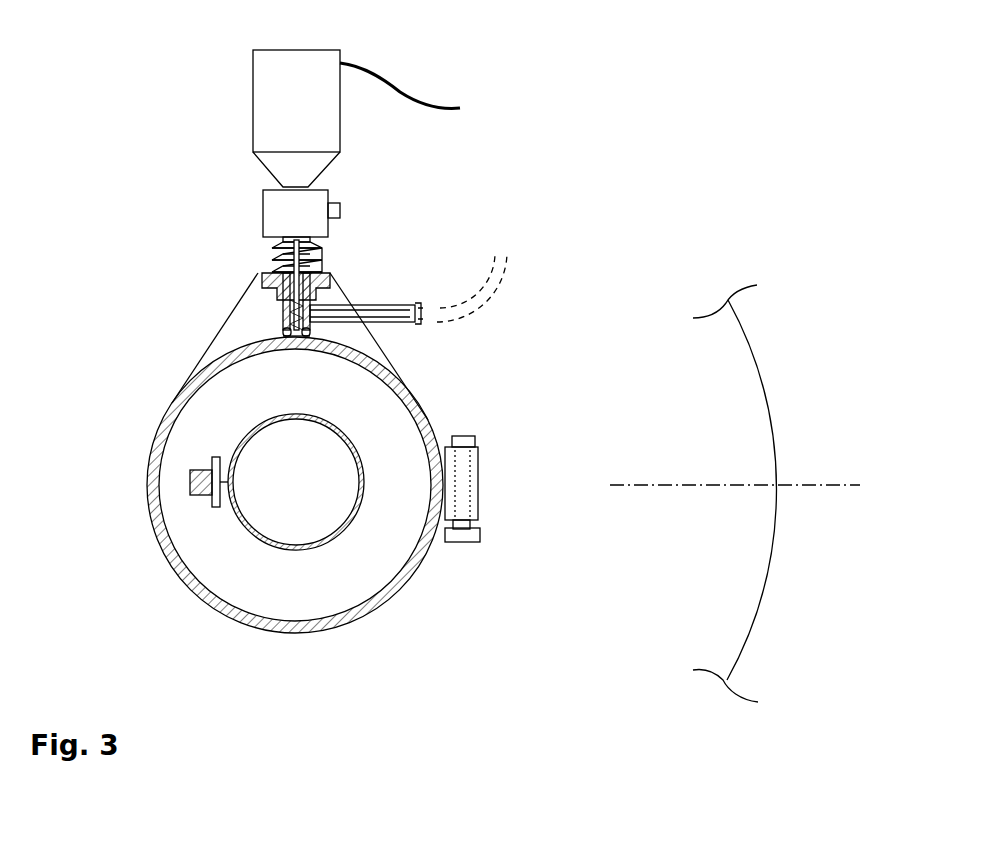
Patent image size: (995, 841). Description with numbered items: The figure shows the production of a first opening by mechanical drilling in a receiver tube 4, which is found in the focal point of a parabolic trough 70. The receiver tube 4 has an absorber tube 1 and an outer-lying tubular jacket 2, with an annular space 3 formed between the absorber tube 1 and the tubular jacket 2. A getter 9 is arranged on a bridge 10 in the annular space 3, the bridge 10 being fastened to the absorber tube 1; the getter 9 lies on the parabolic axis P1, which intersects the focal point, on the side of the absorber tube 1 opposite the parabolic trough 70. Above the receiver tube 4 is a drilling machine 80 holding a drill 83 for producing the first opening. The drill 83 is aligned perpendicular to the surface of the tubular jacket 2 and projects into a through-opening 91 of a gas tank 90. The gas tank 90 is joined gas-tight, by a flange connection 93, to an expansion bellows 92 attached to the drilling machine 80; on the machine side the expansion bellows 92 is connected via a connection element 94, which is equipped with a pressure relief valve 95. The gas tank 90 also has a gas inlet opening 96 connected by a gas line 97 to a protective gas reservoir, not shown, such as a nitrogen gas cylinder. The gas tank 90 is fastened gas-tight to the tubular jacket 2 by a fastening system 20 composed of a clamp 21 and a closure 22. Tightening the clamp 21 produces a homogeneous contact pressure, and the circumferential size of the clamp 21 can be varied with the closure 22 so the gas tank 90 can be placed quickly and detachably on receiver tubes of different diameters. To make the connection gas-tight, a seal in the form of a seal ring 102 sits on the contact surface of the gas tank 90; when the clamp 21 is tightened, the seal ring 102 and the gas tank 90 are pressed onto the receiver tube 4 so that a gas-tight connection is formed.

The absorber tube 1 is at (238, 527).
The tubular jacket 2 is at (180, 405).
The annular space 3 is at (192, 543).
The receiver tube 4 is at (150, 560).
The getter 9 is at (195, 478).
The bridge 10 is at (212, 465).
The fastening system 20 is at (485, 492).
The clamp 21 is at (430, 568).
The closure 22 is at (460, 455).
The parabolic trough 70 is at (760, 355).
The parabolic axis P1 is at (803, 482).
The drilling machine 80 is at (243, 100).
The drill 83 is at (293, 302).
The gas tank 90 is at (280, 312).
The through-opening 91 is at (275, 262).
The expansion bellows 92 is at (278, 245).
The flange connection 93 is at (330, 283).
The connection element 94 is at (315, 215).
The pressure relief valve 95 is at (340, 210).
The gas inlet opening 96 is at (360, 323).
The gas line 97 is at (400, 323).
The seal ring 102 is at (283, 333).